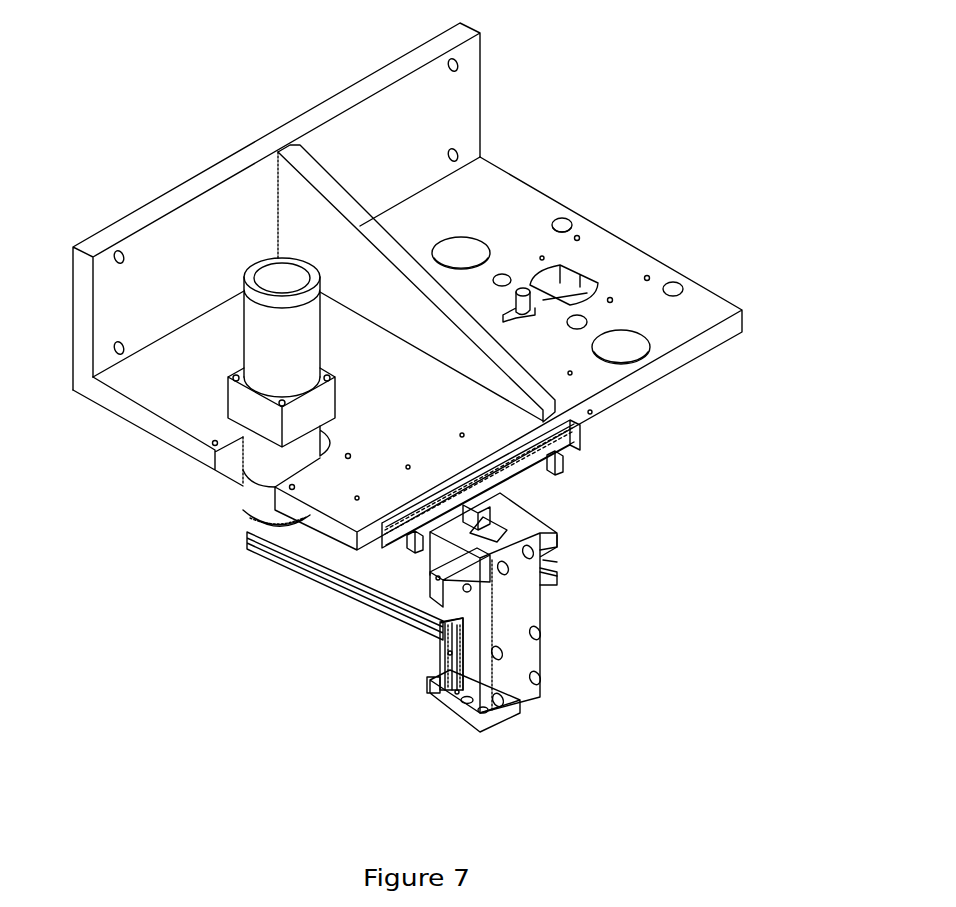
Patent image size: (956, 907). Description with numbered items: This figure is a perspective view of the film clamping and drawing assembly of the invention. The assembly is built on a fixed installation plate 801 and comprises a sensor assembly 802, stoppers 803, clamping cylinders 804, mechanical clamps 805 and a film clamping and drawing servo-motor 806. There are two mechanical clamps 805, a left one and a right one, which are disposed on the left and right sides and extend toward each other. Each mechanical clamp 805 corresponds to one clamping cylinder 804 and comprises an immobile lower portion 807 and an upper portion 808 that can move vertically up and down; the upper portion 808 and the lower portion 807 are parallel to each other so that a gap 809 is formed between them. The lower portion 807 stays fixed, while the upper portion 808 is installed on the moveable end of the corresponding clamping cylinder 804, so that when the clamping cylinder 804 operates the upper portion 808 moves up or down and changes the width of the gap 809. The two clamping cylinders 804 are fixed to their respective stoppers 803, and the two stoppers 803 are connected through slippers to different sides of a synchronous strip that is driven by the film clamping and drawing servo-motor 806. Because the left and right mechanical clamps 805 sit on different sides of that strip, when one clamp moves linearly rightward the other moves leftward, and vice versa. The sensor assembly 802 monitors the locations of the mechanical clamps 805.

The fixed installation plate 801 is at (675, 316).
The sensor assembly 802 is at (565, 460).
The stopper 803 is at (517, 602).
The clamping cylinder 804 is at (463, 670).
The mechanical clamp 805 is at (320, 588).
The film clamping and drawing servo-motor 806 is at (273, 352).
The lower portion 807 is at (362, 607).
The upper portion 808 is at (523, 518).
The gap 809 is at (303, 545).